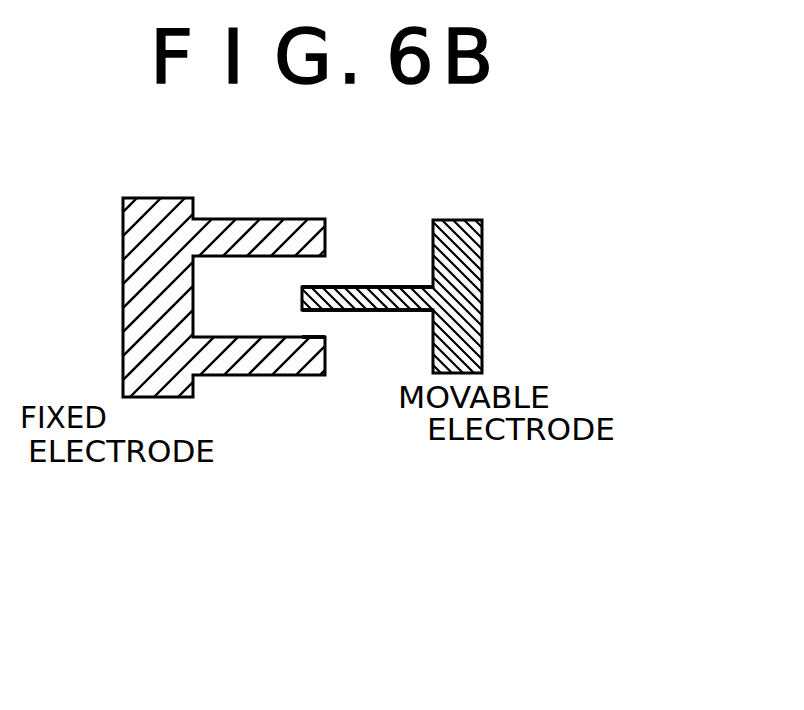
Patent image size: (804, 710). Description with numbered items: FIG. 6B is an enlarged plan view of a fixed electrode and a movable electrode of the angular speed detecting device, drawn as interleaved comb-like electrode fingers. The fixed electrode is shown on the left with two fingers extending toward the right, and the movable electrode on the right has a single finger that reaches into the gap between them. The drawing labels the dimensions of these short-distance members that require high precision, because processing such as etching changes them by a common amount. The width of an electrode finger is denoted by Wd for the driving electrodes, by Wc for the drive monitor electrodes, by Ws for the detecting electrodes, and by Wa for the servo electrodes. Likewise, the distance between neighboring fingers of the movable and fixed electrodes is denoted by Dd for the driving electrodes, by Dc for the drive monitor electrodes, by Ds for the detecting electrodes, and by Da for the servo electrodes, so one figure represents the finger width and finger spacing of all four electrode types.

The distance among the electrode fingers of the driving electrodes Dd is at (314, 310).
The distance among the electrode fingers of the drive monitor electrodes Dc is at (314, 437).
The distance among the electrode fingers of the detecting electrodes Ds is at (314, 437).
The distance among the electrode fingers of the servo electrodes Da is at (314, 437).
The width of the electrode fingers of the driving electrodes Wd is at (390, 255).
The width of the electrode fingers of the drive monitor electrodes Wc is at (390, 367).
The width of the electrode fingers of the detecting electrodes Ws is at (390, 367).
The width of the electrode fingers of the servo electrodes Wa is at (390, 367).